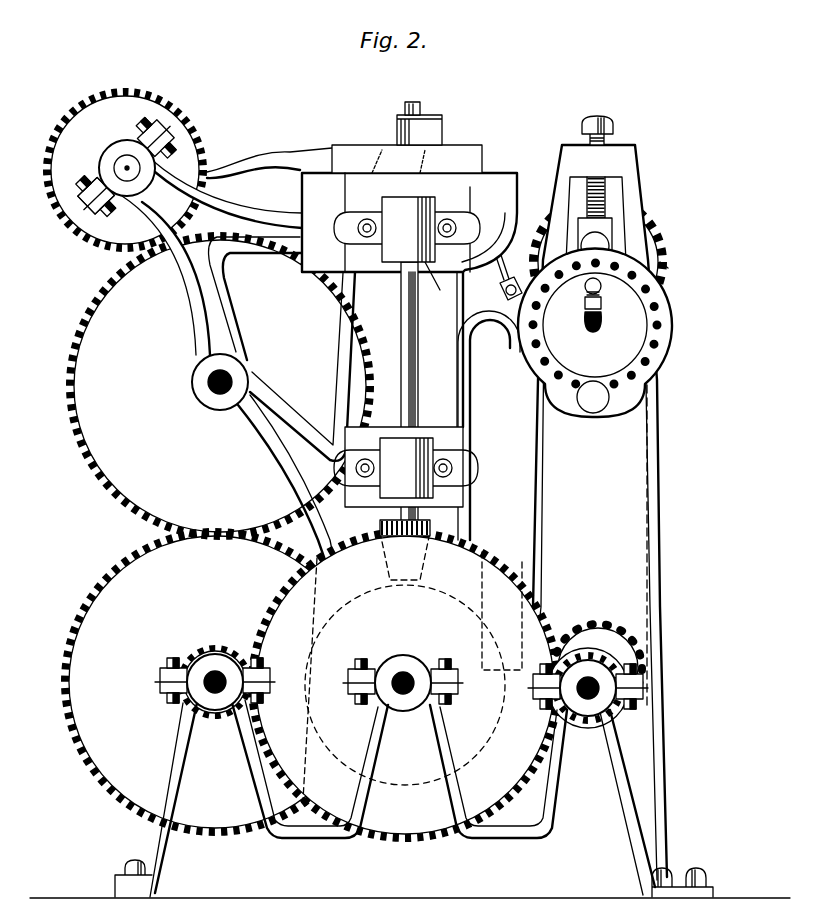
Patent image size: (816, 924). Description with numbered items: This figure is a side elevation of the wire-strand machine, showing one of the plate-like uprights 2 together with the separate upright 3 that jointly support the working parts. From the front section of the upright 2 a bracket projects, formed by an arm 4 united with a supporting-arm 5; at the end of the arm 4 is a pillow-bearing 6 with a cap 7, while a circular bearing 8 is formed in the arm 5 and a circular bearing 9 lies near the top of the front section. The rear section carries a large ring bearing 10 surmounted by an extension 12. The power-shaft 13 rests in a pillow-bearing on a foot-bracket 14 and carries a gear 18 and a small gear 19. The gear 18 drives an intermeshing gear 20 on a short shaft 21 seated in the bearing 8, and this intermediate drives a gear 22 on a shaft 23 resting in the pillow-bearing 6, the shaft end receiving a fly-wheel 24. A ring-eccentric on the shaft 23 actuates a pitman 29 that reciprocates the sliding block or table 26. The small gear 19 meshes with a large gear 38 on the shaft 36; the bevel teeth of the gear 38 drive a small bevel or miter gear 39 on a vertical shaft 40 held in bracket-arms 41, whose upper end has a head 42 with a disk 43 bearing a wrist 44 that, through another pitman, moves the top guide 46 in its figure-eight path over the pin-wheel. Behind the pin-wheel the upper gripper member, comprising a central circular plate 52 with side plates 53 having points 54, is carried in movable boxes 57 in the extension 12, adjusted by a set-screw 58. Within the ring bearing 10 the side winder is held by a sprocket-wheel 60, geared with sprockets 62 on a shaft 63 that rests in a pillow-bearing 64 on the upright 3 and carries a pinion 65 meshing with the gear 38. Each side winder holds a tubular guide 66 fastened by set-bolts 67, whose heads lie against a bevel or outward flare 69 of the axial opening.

The uprights 2 is at (438, 512).
The separate upright 3 is at (558, 801).
The arm 4 is at (255, 214).
The supporting-arm 5 is at (205, 315).
The pillow-bearing 6 is at (116, 175).
The cap 7 is at (95, 198).
The circular bearing 8 is at (216, 404).
The circular bearing 9 is at (420, 276).
The ring bearing 10 is at (616, 332).
The extension 12 is at (628, 244).
The power-shaft 13 is at (212, 672).
The foot-bracket 14 is at (177, 750).
The gear 18 is at (215, 682).
The small gear 19 is at (226, 660).
The intermeshing gear 20 is at (220, 386).
The short shaft 21 is at (248, 399).
The gear 22 is at (106, 106).
The shaft 23 is at (114, 166).
The fly-wheel 24 is at (498, 181).
The sliding block or table 26 is at (468, 148).
The pitman 29 is at (268, 162).
The shaft 36 is at (407, 676).
The large gear 38 is at (405, 685).
The small bevel or miter gear 39 is at (430, 532).
The vertical shaft 40 is at (399, 318).
The bracket-arms 41 is at (407, 352).
The head 42 is at (396, 179).
The disk 43 is at (388, 148).
The wrist 44 is at (440, 128).
The top guide 46 is at (416, 104).
The central circular plate 52 is at (640, 238).
The metallic plates 53 is at (624, 246).
The points 54 is at (668, 269).
The movable boxes 57 is at (606, 232).
The set-screw 58 is at (616, 131).
The sprocket-wheel 60 is at (650, 364).
The sprockets 62 is at (612, 673).
The shaft 63 is at (588, 702).
The pillow-bearing 64 is at (616, 712).
The pinion 65 is at (587, 655).
The tubular guide 66 is at (590, 294).
The set-bolts 67 is at (588, 319).
The bevel or outward flare 69 is at (601, 315).